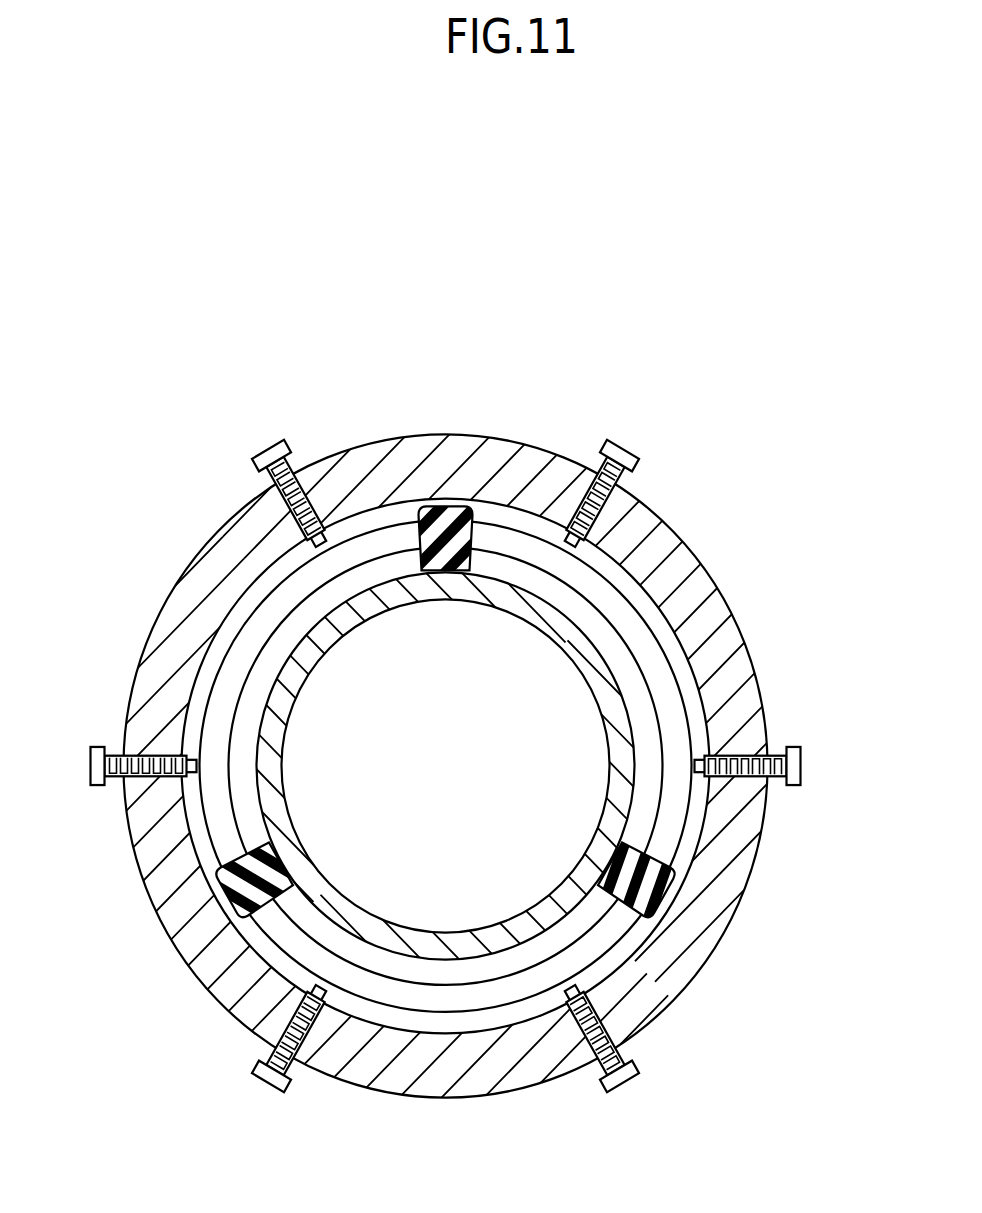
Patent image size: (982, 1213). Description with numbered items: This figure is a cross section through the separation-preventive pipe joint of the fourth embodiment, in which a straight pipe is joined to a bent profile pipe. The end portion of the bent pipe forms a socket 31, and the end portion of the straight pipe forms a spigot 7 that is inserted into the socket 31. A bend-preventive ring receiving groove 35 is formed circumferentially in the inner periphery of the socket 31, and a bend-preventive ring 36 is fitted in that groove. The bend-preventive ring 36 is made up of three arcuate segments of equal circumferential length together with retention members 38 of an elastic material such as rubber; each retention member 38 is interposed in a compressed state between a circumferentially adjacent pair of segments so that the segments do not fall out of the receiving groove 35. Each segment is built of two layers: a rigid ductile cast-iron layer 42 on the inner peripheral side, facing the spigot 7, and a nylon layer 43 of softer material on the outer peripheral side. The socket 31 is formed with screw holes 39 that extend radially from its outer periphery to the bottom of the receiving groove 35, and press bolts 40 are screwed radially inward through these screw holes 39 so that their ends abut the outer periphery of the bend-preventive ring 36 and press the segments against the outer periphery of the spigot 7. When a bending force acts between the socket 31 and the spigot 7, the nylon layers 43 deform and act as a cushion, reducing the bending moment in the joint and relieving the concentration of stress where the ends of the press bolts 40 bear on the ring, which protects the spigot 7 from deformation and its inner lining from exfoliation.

The spigot 7 is at (357, 625).
The socket 31 is at (513, 446).
The bend-preventive ring receiving groove 35 is at (228, 618).
The bend-preventive ring 36 is at (677, 634).
The retention members 38 is at (447, 515).
The screw holes 39 is at (287, 508).
The press bolts 40 is at (277, 457).
The ductile cast-iron layer 42 is at (255, 682).
The nylon layer 43 is at (215, 752).